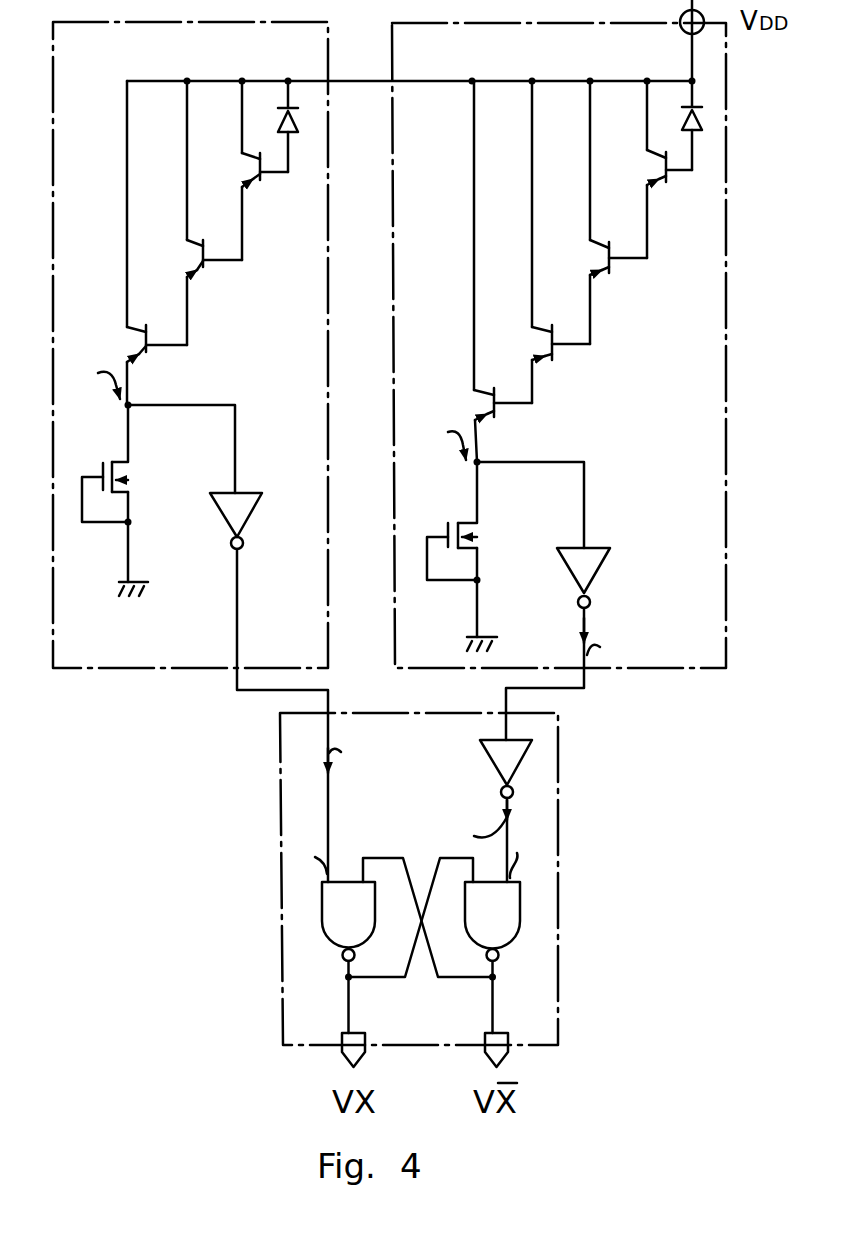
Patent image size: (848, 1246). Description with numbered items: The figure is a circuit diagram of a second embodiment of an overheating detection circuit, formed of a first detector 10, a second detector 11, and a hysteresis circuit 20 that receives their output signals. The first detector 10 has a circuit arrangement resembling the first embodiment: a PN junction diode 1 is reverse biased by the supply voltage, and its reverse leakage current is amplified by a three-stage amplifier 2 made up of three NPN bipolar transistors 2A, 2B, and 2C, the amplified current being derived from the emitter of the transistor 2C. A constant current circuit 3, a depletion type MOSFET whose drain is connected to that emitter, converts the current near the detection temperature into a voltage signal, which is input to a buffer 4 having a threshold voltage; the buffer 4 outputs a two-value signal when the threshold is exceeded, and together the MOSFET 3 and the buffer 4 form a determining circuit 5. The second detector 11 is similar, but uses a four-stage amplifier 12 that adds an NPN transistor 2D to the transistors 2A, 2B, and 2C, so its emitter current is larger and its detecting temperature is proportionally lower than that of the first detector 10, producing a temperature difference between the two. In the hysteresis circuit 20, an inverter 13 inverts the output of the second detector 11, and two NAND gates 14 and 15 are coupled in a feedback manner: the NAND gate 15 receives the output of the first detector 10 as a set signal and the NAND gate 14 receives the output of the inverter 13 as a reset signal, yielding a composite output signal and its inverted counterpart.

The PN junction diode 1 is at (299, 121).
The 3-stage amplifier 2 is at (309, 213).
The NPN bipolar transistor 2A is at (254, 184).
The NPN bipolar transistor 2B is at (204, 273).
The NPN bipolar transistor 2C is at (151, 338).
The NPN transistor 2D is at (496, 392).
The constant current circuit 3 is at (126, 470).
The buffer 4 is at (426, 550).
The determining circuit 5 is at (386, 528).
The first detector 10 is at (84, 674).
The second detector 11 is at (607, 677).
The 4-stage amplifier 12 is at (785, 213).
The inverter 13 is at (516, 755).
The NAND gate 14 is at (503, 912).
The NAND gate 15 is at (327, 915).
The hysteresis circuit 20 is at (566, 981).